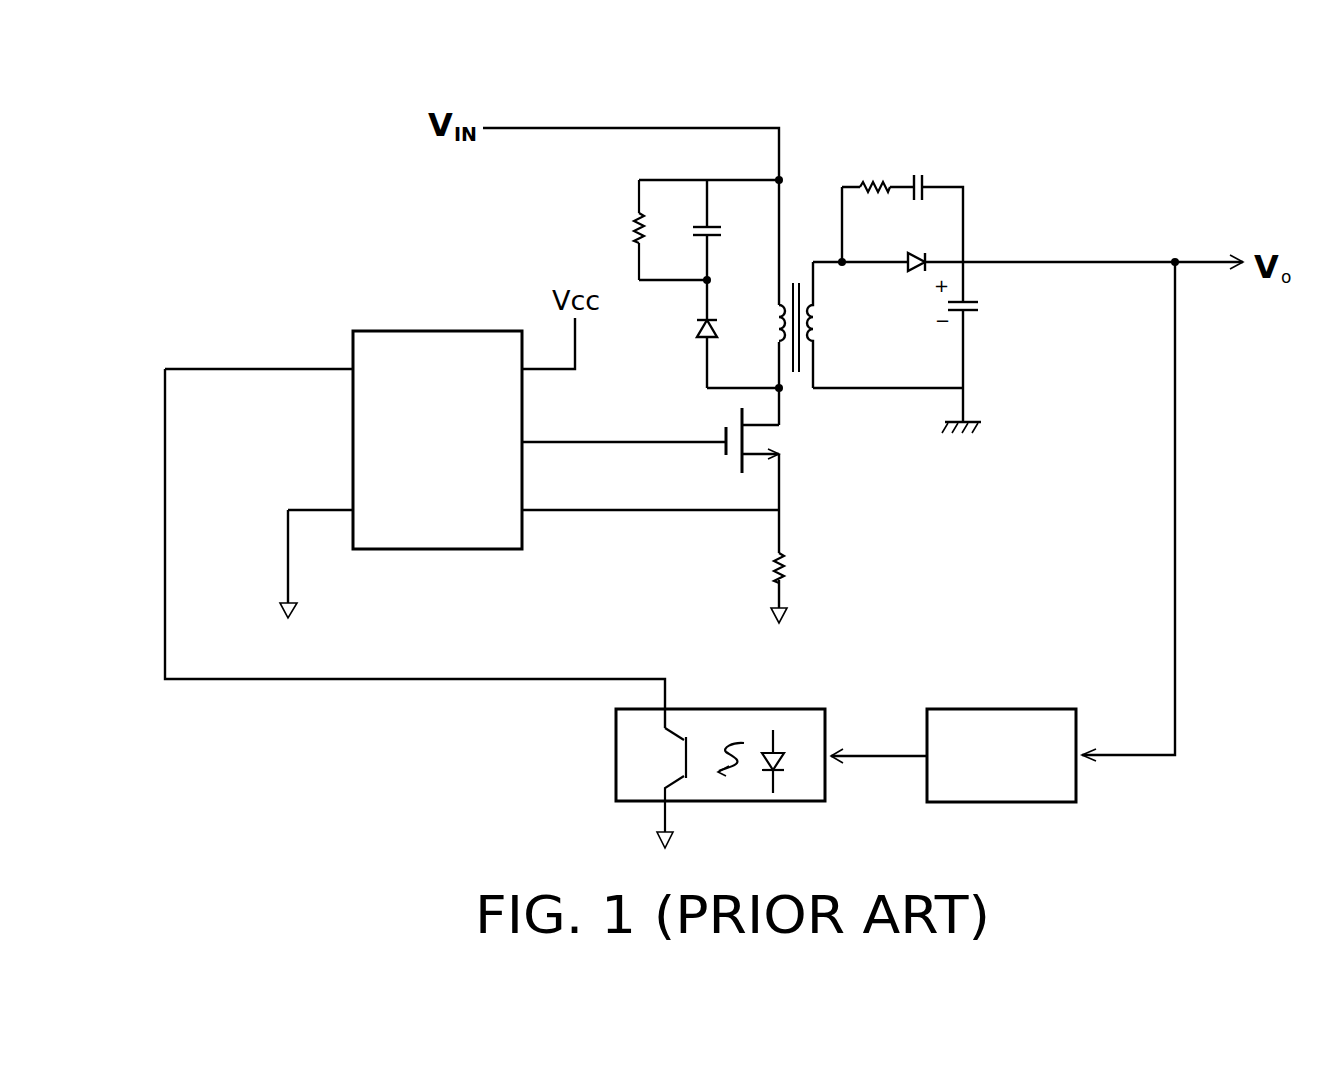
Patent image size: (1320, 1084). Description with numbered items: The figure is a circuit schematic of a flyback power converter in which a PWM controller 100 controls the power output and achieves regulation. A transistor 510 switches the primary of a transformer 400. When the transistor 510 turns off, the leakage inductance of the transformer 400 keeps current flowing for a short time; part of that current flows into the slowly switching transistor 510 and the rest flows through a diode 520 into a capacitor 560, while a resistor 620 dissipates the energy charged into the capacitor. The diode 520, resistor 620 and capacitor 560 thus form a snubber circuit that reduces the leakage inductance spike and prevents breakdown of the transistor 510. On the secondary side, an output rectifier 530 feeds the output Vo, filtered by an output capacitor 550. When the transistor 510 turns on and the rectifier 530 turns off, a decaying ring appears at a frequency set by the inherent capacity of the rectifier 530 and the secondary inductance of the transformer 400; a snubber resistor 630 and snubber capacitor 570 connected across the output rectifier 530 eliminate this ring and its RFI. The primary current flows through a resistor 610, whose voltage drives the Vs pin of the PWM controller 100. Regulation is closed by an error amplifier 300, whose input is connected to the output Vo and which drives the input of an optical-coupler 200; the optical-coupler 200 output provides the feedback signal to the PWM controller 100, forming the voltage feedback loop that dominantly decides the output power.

The PWM controller 100 is at (437, 333).
The optical-coupler 200 is at (763, 710).
The error amplifier 300 is at (997, 709).
The transformer 400 is at (795, 265).
The transistor 510 is at (768, 442).
The diode 520 is at (690, 328).
The output rectifier 530 is at (918, 248).
The output capacitor 550 is at (982, 303).
The capacitor 560 is at (697, 220).
The snubber capacitor 570 is at (927, 178).
The resistor 610 is at (790, 570).
The resistor 620 is at (630, 223).
The snubber resistor 630 is at (872, 183).